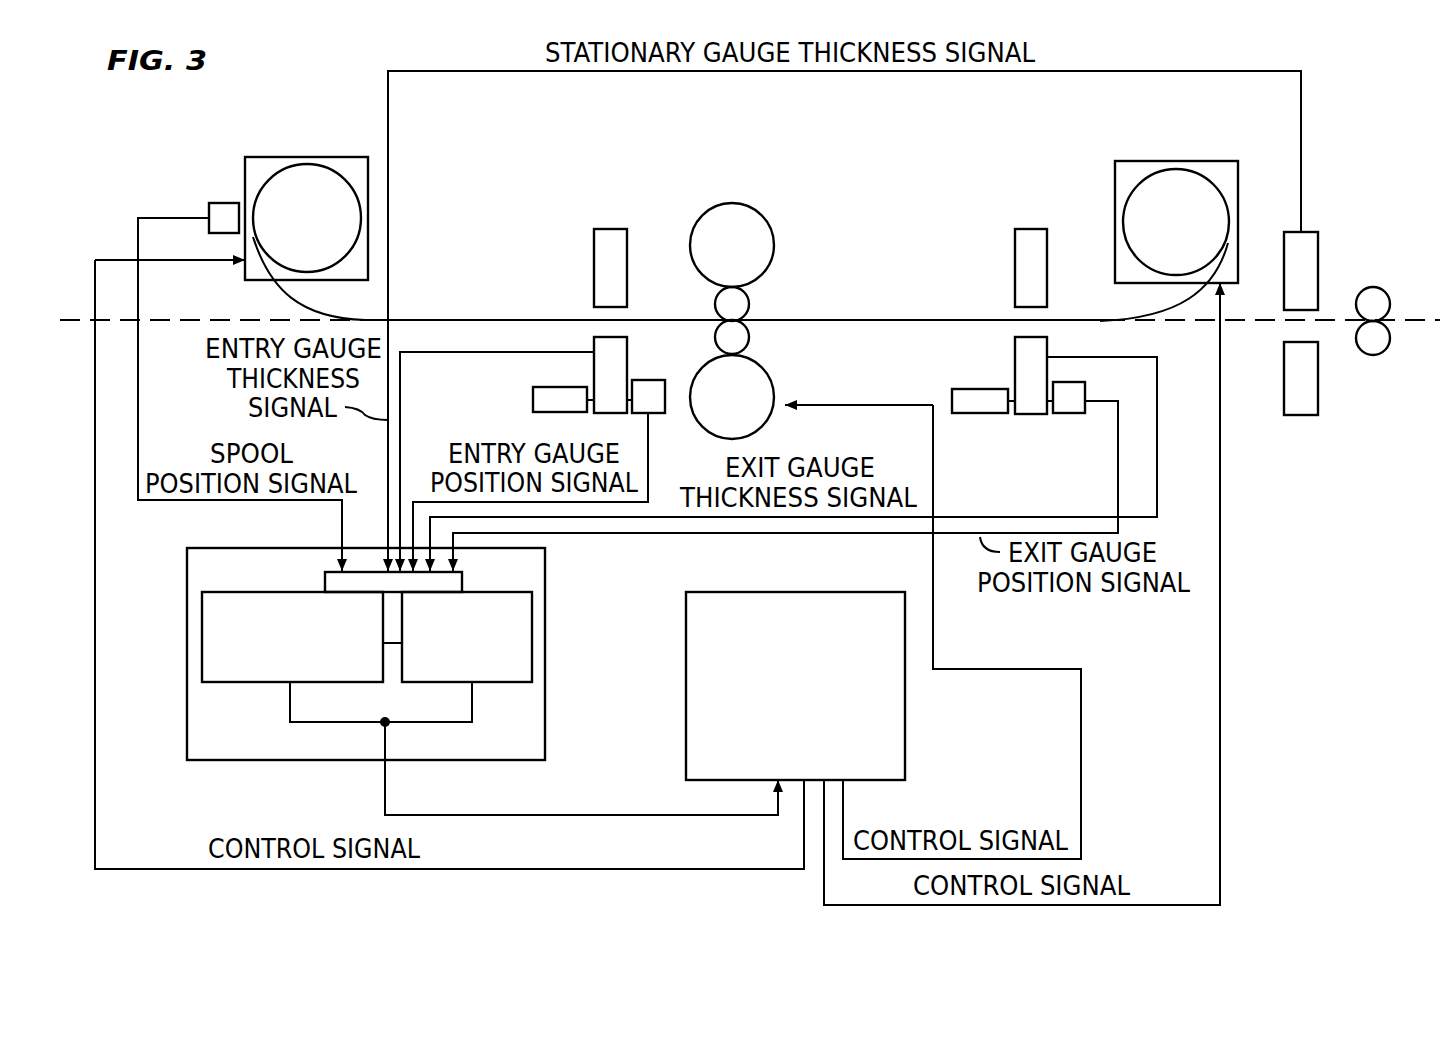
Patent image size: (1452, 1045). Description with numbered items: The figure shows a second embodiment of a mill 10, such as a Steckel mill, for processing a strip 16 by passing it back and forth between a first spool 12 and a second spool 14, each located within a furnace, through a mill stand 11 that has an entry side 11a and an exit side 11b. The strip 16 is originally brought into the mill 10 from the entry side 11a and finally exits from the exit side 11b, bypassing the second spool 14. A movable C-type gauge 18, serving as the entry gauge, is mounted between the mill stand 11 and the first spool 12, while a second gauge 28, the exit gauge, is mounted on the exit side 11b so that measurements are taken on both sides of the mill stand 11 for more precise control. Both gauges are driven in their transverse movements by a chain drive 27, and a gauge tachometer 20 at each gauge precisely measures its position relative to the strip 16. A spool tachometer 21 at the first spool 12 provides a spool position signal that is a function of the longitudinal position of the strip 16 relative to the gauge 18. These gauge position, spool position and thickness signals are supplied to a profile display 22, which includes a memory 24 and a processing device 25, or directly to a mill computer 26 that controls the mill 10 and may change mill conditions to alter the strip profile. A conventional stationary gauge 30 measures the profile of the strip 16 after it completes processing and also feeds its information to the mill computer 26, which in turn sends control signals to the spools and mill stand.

The mill 10 is at (702, 131).
The mill stand 11 is at (752, 297).
The entry side 11a is at (690, 311).
The exit side 11b is at (788, 302).
The first spool 12 is at (308, 163).
The second spool 14 is at (1170, 168).
The strip 16 is at (457, 318).
The gauge 18 is at (607, 229).
The gauge tachometer 20 is at (645, 380).
The spool tachometer 21 is at (222, 203).
The profile display 22 is at (422, 654).
The memory 24 is at (483, 592).
The processing device 25 is at (252, 592).
The mill computer 26 is at (797, 593).
The chain drive 27 is at (545, 387).
The second gauge 28 is at (1028, 229).
The stationary gauge 30 is at (1300, 415).